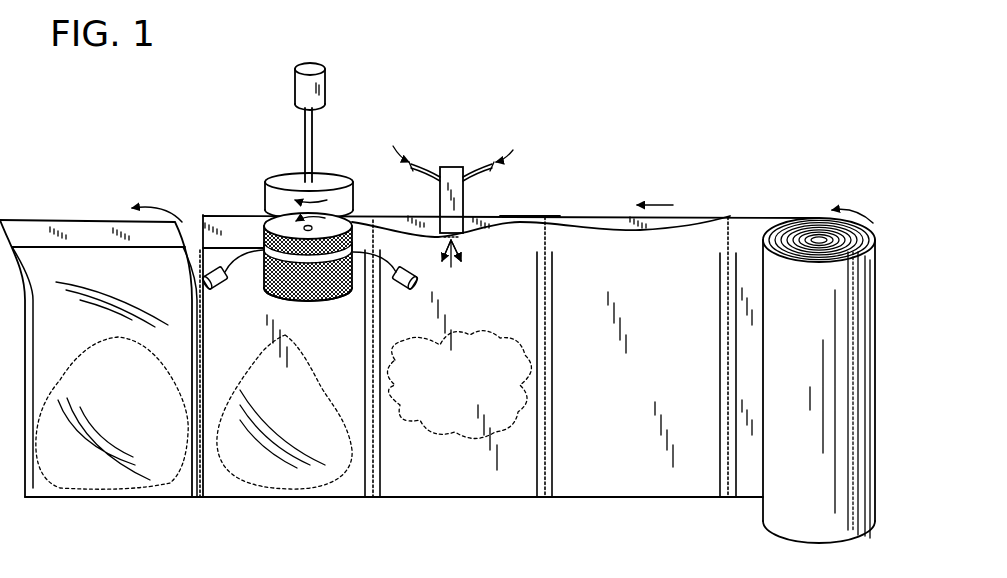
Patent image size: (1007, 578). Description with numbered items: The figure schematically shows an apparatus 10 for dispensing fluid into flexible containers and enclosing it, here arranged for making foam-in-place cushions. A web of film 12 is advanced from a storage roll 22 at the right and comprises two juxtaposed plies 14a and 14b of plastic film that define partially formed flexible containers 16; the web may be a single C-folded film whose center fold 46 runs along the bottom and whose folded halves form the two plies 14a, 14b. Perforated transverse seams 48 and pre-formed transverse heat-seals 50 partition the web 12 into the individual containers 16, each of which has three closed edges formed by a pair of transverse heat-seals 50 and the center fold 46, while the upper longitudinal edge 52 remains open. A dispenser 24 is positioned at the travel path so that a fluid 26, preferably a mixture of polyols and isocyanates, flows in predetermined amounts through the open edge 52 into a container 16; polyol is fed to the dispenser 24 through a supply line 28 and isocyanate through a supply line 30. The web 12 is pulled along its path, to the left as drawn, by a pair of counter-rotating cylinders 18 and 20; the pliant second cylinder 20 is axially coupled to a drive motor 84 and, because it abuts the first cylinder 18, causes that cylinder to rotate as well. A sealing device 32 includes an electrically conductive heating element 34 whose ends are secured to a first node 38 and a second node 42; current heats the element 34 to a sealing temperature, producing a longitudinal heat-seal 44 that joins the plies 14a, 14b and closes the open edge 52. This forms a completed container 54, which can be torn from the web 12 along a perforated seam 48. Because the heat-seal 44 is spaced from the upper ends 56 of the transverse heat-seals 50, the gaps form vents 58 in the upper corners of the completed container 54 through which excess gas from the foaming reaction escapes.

The apparatus 10 is at (660, 151).
The web of film 12 is at (641, 483).
The film ply 14a is at (590, 215).
The film ply 14b is at (673, 228).
The partially formed flexible container 16 is at (418, 473).
The first cylinder 18 is at (274, 229).
The second cylinder 20 is at (280, 184).
The storage roll 22 is at (802, 528).
The dispenser 24 is at (448, 167).
The fluid 26 is at (318, 383).
The supply line 28 is at (473, 183).
The supply line 30 is at (428, 170).
The sealing device 32 is at (346, 151).
The heating element 34 is at (360, 291).
The first node 38 is at (222, 284).
The second node 42 is at (403, 288).
The longitudinal heat-seal 44 is at (98, 247).
The center fold 46 is at (482, 500).
The perforated transverse seam 48 is at (195, 483).
The transverse heat-seal 50 is at (553, 388).
The upper longitudinal edge 52 is at (532, 213).
The completed container 54 is at (52, 340).
The upper end of transverse heat-seal 56 is at (207, 258).
The vent 58 is at (30, 251).
The drive motor 84 is at (326, 86).